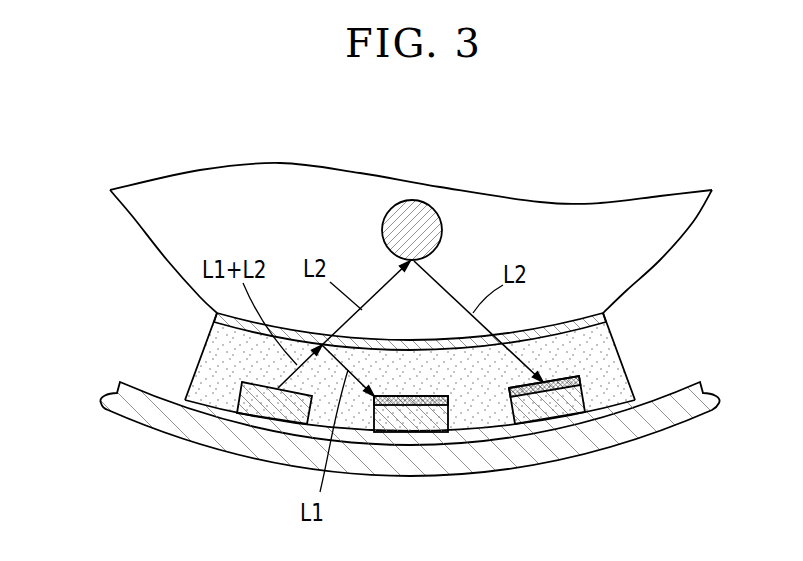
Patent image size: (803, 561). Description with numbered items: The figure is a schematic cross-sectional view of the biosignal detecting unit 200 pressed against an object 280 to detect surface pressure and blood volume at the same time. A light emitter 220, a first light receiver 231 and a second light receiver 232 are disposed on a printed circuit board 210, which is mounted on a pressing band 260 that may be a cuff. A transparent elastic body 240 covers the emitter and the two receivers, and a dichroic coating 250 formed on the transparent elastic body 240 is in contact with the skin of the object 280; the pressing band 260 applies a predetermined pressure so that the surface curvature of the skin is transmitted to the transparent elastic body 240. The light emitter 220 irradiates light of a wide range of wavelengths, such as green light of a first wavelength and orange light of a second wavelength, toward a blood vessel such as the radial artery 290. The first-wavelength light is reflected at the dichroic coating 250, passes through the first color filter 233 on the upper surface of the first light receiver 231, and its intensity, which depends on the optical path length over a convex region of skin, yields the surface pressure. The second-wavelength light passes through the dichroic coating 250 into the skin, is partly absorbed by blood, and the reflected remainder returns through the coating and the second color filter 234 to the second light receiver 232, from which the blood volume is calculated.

The biosignal detecting unit 200 is at (387, 410).
The printed circuit board 210 is at (480, 438).
The light emitter 220 is at (268, 410).
The first light receiver 231 is at (410, 425).
The second light receiver 232 is at (550, 410).
The first color filter 233 is at (413, 395).
The second color filter 234 is at (560, 377).
The transparent elastic body 240 is at (617, 358).
The dichroic coating 250 is at (603, 313).
The pressing band 260 is at (672, 418).
The object 280 is at (685, 218).
The radial artery 290 is at (423, 203).